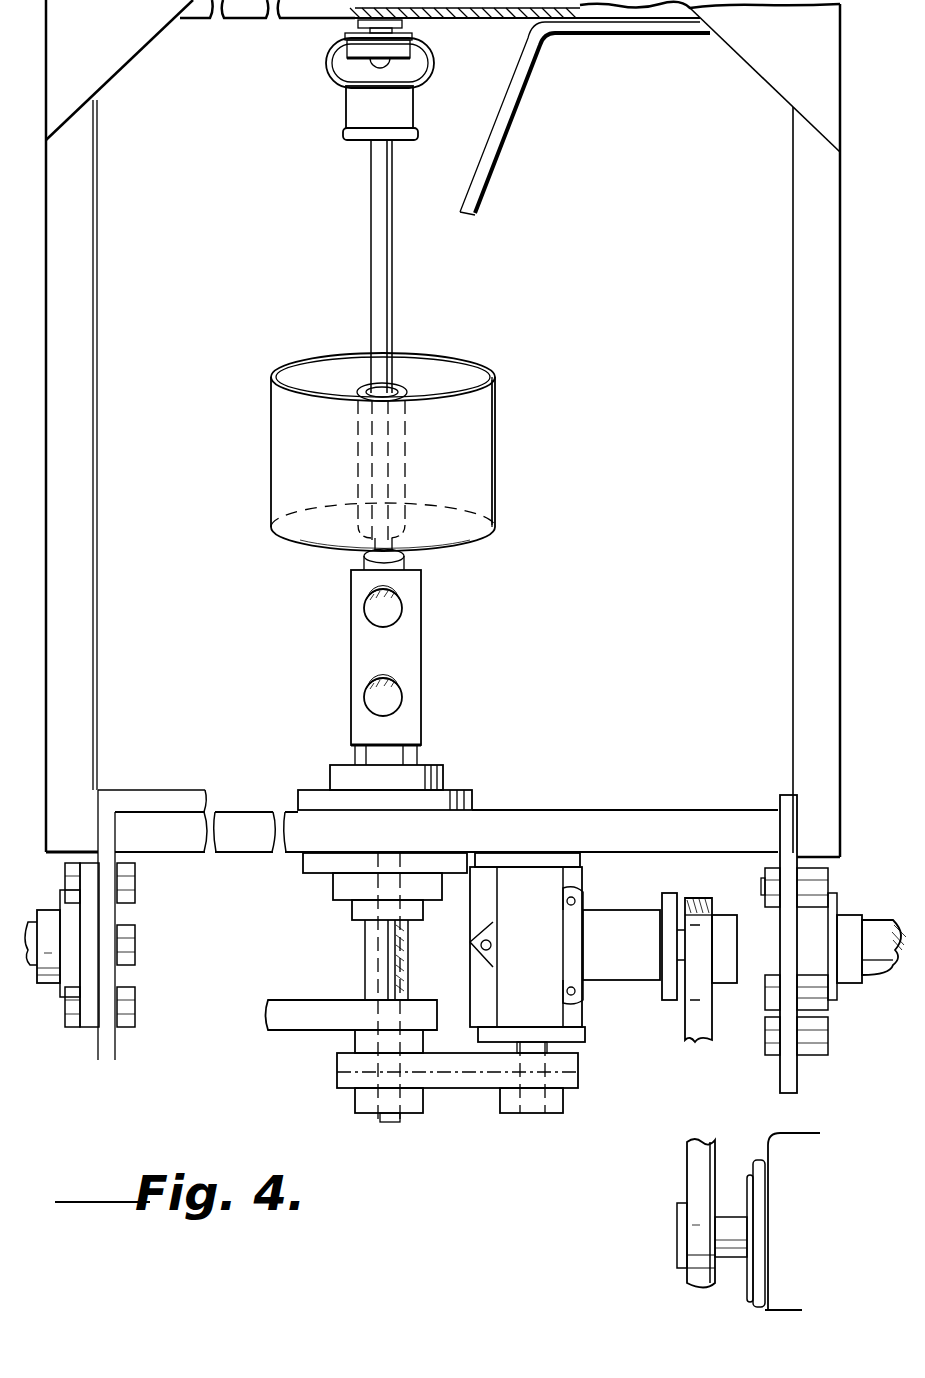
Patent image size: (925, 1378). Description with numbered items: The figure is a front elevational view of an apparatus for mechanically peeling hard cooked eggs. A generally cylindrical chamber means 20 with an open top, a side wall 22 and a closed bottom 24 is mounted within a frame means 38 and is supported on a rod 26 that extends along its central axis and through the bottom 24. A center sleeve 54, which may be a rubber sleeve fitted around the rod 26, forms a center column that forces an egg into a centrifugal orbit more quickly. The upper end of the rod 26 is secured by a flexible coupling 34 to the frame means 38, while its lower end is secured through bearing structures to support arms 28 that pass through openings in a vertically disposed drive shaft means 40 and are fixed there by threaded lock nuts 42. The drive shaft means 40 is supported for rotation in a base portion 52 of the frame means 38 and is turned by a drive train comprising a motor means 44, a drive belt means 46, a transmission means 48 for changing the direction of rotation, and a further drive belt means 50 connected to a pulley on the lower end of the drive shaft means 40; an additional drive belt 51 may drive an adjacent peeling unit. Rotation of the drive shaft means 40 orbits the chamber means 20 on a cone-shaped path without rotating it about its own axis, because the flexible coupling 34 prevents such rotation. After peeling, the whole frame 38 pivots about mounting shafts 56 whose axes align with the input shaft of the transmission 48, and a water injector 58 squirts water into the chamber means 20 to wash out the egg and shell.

The chamber means 20 is at (274, 462).
The side wall 22 is at (497, 462).
The closed bottom 24 is at (440, 530).
The rod 26 is at (378, 220).
The support arms 28 is at (370, 558).
The flexible coupling 34 is at (358, 110).
The frame means 38 is at (854, 624).
The drive shaft means 40 is at (415, 664).
The threaded lock nuts 42 is at (395, 615).
The motor means 44 is at (764, 1221).
The drive belt means 46 is at (695, 1018).
The transmission means 48 is at (622, 955).
The further drive belt means 50 is at (462, 1090).
The additional drive belt 51 is at (303, 992).
The base portion 52 is at (510, 823).
The center sleeve 54 is at (405, 390).
The mounting shafts 56 is at (877, 930).
The water injector 58 is at (480, 190).